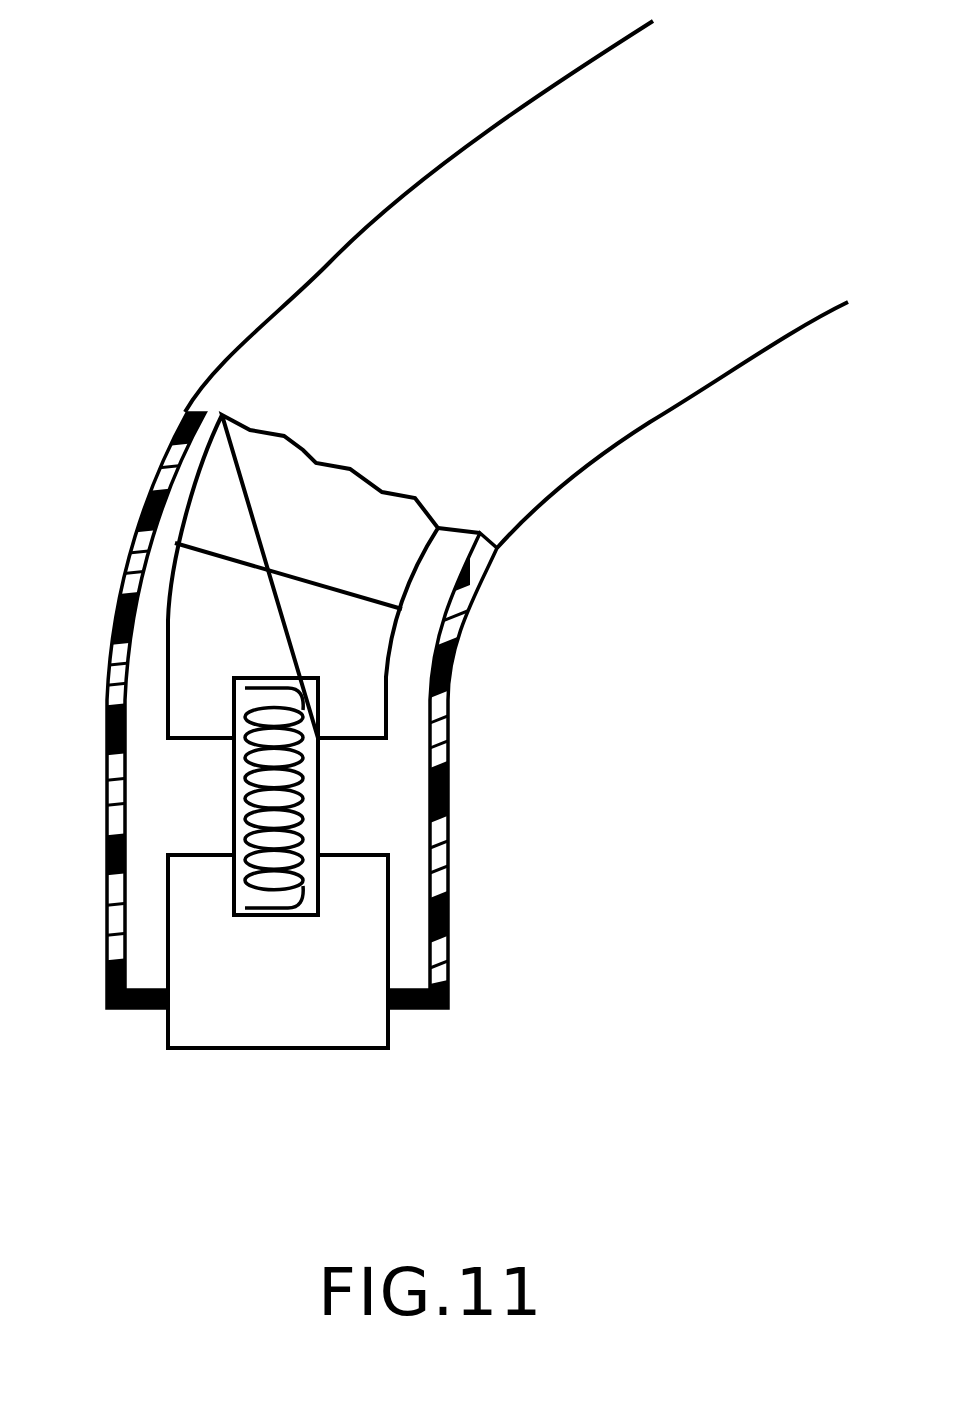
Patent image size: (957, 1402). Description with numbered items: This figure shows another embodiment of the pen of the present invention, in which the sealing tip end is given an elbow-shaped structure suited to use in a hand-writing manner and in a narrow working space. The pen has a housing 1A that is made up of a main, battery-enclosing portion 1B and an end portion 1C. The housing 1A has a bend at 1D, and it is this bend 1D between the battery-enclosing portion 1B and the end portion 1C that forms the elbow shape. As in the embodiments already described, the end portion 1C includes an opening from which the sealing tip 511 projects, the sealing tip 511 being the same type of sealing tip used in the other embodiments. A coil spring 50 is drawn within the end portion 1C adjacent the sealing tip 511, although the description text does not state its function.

The housing 1A is at (376, 171).
The main, battery-enclosing portion 1B is at (697, 397).
The end portion 1C is at (448, 897).
The bend 1D is at (458, 611).
The coil spring 50 is at (305, 804).
The sealing tip 511 is at (280, 1050).